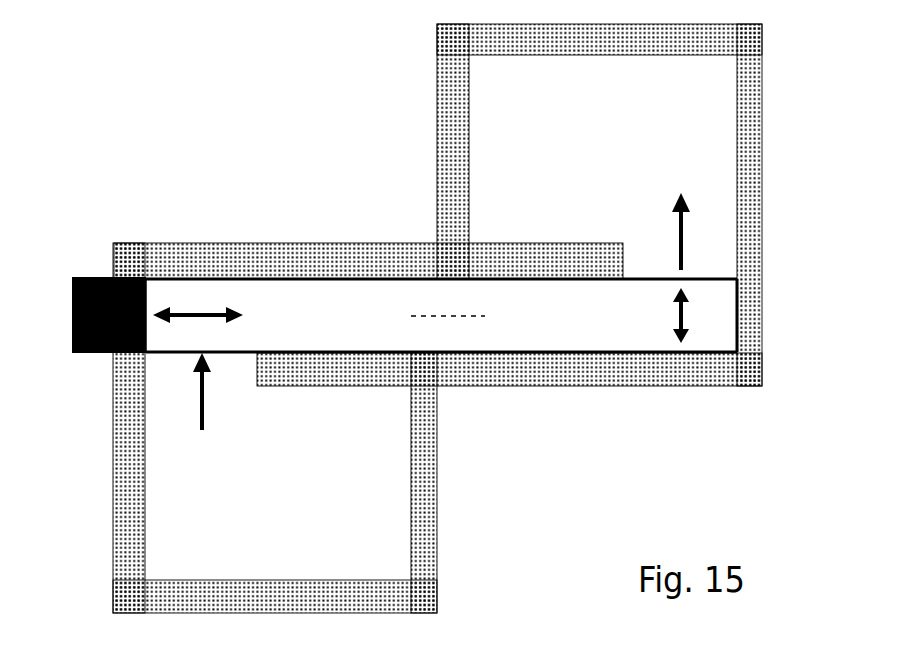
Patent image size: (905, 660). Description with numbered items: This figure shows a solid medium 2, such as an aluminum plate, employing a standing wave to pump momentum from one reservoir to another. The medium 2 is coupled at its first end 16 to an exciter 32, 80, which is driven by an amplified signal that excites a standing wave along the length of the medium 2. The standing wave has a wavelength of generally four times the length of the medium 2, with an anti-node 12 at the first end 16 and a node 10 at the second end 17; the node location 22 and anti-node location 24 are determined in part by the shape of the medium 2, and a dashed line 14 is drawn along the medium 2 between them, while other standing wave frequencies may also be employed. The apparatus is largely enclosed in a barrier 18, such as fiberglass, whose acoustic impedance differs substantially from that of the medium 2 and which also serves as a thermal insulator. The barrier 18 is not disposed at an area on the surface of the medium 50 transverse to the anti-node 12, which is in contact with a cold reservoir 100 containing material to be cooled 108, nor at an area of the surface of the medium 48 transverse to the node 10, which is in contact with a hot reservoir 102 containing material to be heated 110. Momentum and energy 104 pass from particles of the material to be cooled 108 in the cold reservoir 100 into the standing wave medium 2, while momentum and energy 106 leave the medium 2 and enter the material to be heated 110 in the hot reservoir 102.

The resonating medium 2 is at (600, 327).
The node 10 is at (765, 310).
The node location 22 is at (683, 318).
The anti-node 12 is at (216, 257).
The anti-node location 24 is at (194, 312).
The central axis 14 is at (453, 317).
The first end 16 is at (146, 311).
The second end 17 is at (740, 315).
The barrier 18 is at (513, 262).
The exciter 32 is at (86, 287).
The exciter 80 is at (82, 277).
The area of the surface of the medium 48 is at (697, 268).
The area on the surface of the medium 50 is at (170, 357).
The cold reservoir 100 is at (310, 428).
The hot reservoir 102 is at (466, 318).
The momentum and energy 104 is at (200, 392).
The momentum and energy 106 is at (683, 236).
The material to be cooled 108 is at (378, 522).
The material to be heated 110 is at (466, 318).